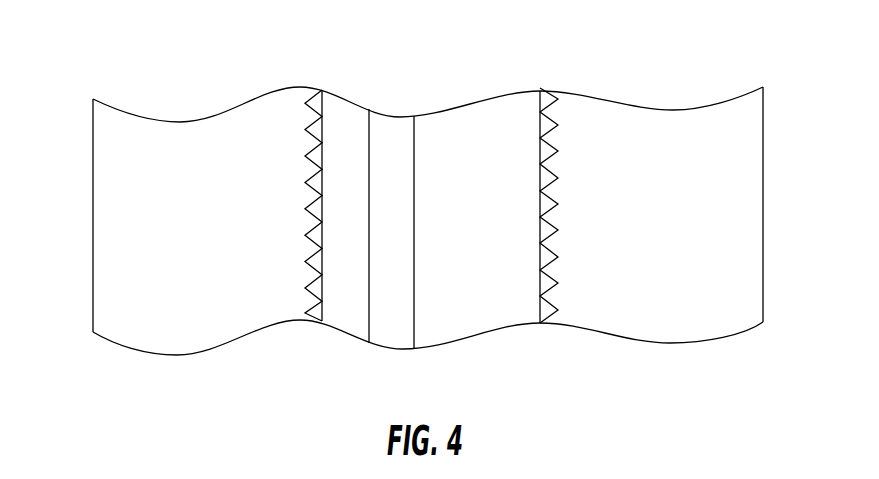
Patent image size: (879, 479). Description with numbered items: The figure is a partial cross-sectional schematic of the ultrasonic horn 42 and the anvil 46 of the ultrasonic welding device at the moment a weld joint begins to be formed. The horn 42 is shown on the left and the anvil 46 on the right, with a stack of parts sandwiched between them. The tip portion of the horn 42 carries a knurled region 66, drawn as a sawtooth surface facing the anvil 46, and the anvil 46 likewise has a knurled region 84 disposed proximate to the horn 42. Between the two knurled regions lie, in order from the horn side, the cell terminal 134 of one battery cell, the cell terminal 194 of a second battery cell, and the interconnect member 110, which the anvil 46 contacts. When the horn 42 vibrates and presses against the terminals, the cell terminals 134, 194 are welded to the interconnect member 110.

The ultrasonic horn 42 is at (110, 178).
The anvil 46 is at (744, 157).
The knurled region 66 is at (313, 322).
The knurled region 84 is at (540, 323).
The interconnect member 110 is at (469, 128).
The cell terminal 134 is at (346, 116).
The cell terminal 194 is at (389, 124).